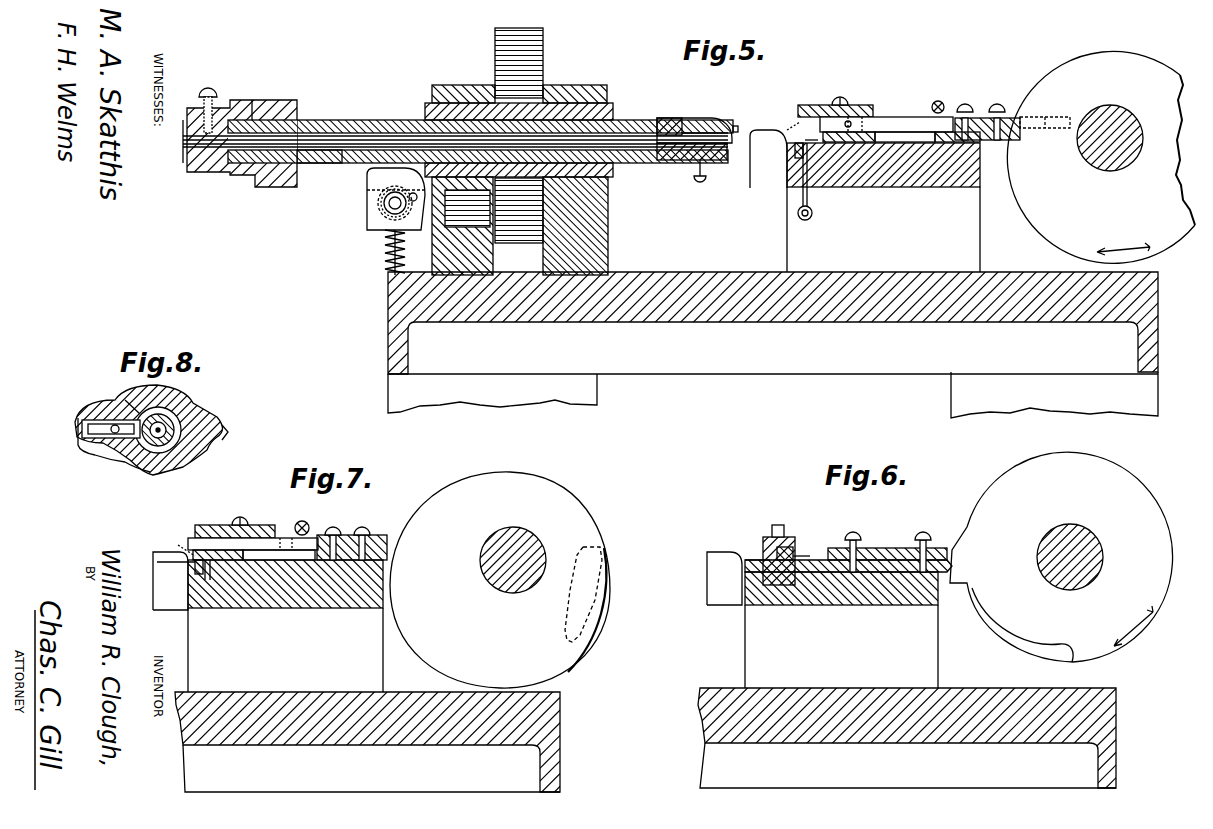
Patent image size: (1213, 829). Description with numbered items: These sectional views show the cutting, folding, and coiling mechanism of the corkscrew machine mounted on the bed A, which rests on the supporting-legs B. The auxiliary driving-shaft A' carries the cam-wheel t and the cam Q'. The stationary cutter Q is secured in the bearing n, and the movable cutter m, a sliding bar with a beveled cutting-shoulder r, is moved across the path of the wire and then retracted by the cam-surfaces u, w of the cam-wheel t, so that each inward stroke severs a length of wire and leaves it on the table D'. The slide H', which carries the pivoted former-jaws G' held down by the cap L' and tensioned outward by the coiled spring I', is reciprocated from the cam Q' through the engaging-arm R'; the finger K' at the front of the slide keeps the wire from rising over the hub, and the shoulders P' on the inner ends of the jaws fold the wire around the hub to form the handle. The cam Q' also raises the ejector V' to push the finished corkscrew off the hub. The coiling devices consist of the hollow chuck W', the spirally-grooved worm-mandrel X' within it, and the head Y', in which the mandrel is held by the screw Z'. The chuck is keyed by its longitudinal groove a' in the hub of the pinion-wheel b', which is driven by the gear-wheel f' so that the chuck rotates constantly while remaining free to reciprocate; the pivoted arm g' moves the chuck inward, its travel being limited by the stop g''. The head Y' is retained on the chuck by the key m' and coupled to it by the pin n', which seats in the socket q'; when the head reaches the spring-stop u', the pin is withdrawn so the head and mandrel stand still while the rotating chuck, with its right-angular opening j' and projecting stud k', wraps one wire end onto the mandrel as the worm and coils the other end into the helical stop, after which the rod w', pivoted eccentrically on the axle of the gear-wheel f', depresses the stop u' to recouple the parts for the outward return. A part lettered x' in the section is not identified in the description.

In FIG. 5, the bed A is at (606, 414).
In FIG. 7, the bed A is at (606, 414).
In FIG. 6, the bed A is at (606, 414).
In FIG. 5, the supporting-legs B is at (773, 395).
In FIG. 5, the elongated longitudinal groove a' is at (606, 414).
In FIG. 5, the head Y' is at (606, 414).
In FIG. 8, the head Y' is at (606, 414).
In FIG. 7, the head Y' is at (217, 572).
In FIG. 5, the screw Z' is at (207, 103).
In FIG. 5, the key m' is at (254, 99).
In FIG. 5, the hollow chuck W' is at (319, 165).
In FIG. 8, the hollow chuck W' is at (223, 417).
In FIG. 5, the pinion-wheel b' is at (606, 414).
In FIG. 5, the gear-wheel f' is at (547, 414).
In FIG. 5, the spring-stop u' is at (396, 221).
In FIG. 5, the rod w' is at (388, 205).
In FIG. 5, the spirally-grooved worm-mandrel X' is at (606, 414).
In FIG. 8, the spirally-grooved worm-mandrel X' is at (123, 400).
In FIG. 5, the right-angular opening j' is at (606, 414).
In FIG. 5, the projecting stud k' is at (740, 120).
In FIG. 5, the stop g'' is at (768, 159).
In FIG. 7, the stop g'' is at (170, 581).
In FIG. 6, the stop g'' is at (724, 578).
In FIG. 5, the table D' is at (606, 414).
In FIG. 7, the table D' is at (606, 414).
In FIG. 6, the table D' is at (606, 414).
In FIG. 5, the ejector V' is at (812, 181).
In FIG. 5, the cap L' is at (606, 414).
In FIG. 7, the cap L' is at (606, 414).
In FIG. 5, the jaws G' is at (606, 414).
In FIG. 7, the jaws G' is at (606, 414).
In FIG. 5, the coiled spring I' is at (933, 104).
In FIG. 7, the coiled spring I' is at (302, 521).
In FIG. 5, the engaging-arm R' is at (606, 414).
In FIG. 7, the engaging-arm R' is at (606, 414).
In FIG. 5, the slide H' is at (606, 414).
In FIG. 5, the shoulders P' is at (793, 123).
In FIG. 7, the shoulders P' is at (176, 548).
In FIG. 5, the finger K' is at (606, 414).
In FIG. 7, the finger K' is at (606, 414).
In FIG. 5, the cam Q' is at (1101, 157).
In FIG. 7, the cam Q' is at (500, 580).
In FIG. 5, the auxiliary driving-shaft A' is at (606, 414).
In FIG. 7, the auxiliary driving-shaft A' is at (606, 414).
In FIG. 6, the auxiliary driving-shaft A' is at (606, 414).
In FIG. 8, the pin n' is at (100, 436).
In FIG. 8, the lug x' is at (110, 463).
In FIG. 8, the socket q' is at (137, 479).
In FIG. 6, the cam-surface u is at (606, 414).
In FIG. 6, the movable cutter m is at (606, 414).
In FIG. 6, the bearing n is at (606, 414).
In FIG. 6, the cutter Q is at (606, 414).
In FIG. 6, the beveled cutting-shoulder r is at (802, 551).
In FIG. 6, the pivoted arm g' is at (756, 550).
In FIG. 6, the cam-wheel t is at (1061, 557).
In FIG. 6, the cam-surface w is at (1022, 625).